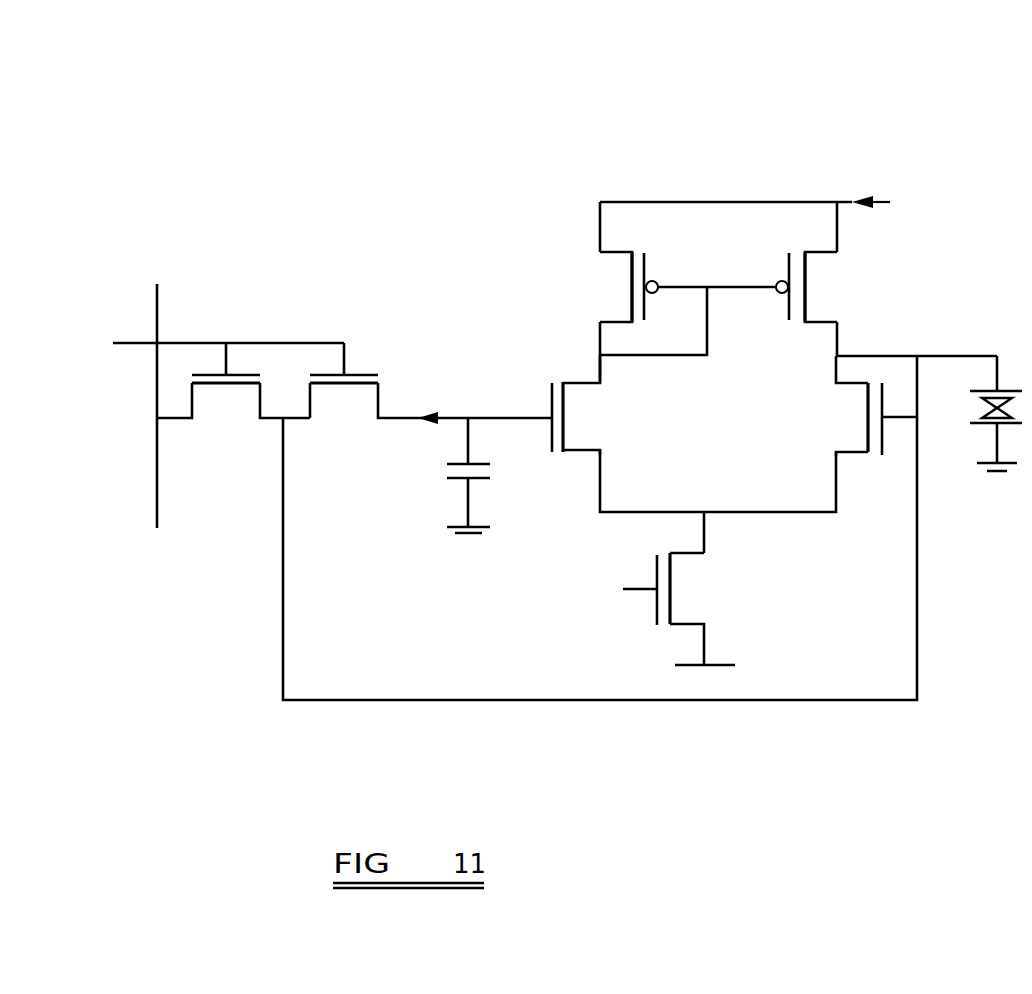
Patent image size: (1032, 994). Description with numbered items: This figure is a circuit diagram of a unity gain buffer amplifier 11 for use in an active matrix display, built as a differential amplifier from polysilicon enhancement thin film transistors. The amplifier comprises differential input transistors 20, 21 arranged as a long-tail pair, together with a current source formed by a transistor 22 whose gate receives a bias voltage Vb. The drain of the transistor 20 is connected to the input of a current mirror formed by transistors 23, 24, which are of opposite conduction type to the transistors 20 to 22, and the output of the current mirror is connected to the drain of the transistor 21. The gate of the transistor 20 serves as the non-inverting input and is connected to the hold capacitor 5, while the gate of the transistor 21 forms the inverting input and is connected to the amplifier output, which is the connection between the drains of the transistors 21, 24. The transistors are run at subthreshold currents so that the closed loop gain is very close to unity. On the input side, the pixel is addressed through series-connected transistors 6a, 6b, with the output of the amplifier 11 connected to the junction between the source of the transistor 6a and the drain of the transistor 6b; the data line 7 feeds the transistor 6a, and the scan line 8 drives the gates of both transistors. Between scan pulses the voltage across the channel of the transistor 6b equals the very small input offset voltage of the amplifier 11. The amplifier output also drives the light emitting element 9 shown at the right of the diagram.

The amplifier 11 is at (767, 167).
The data line 7 is at (160, 303).
The scan line 8 is at (113, 343).
The transistor 6a is at (210, 388).
The transistor 6b is at (342, 388).
The hold capacitor 5 is at (482, 463).
The differential input transistor 20 is at (565, 422).
The differential input transistor 21 is at (868, 420).
The transistor 22 is at (672, 595).
The transistor 23 is at (647, 268).
The transistor 24 is at (789, 259).
The light emitting element 9 is at (975, 388).